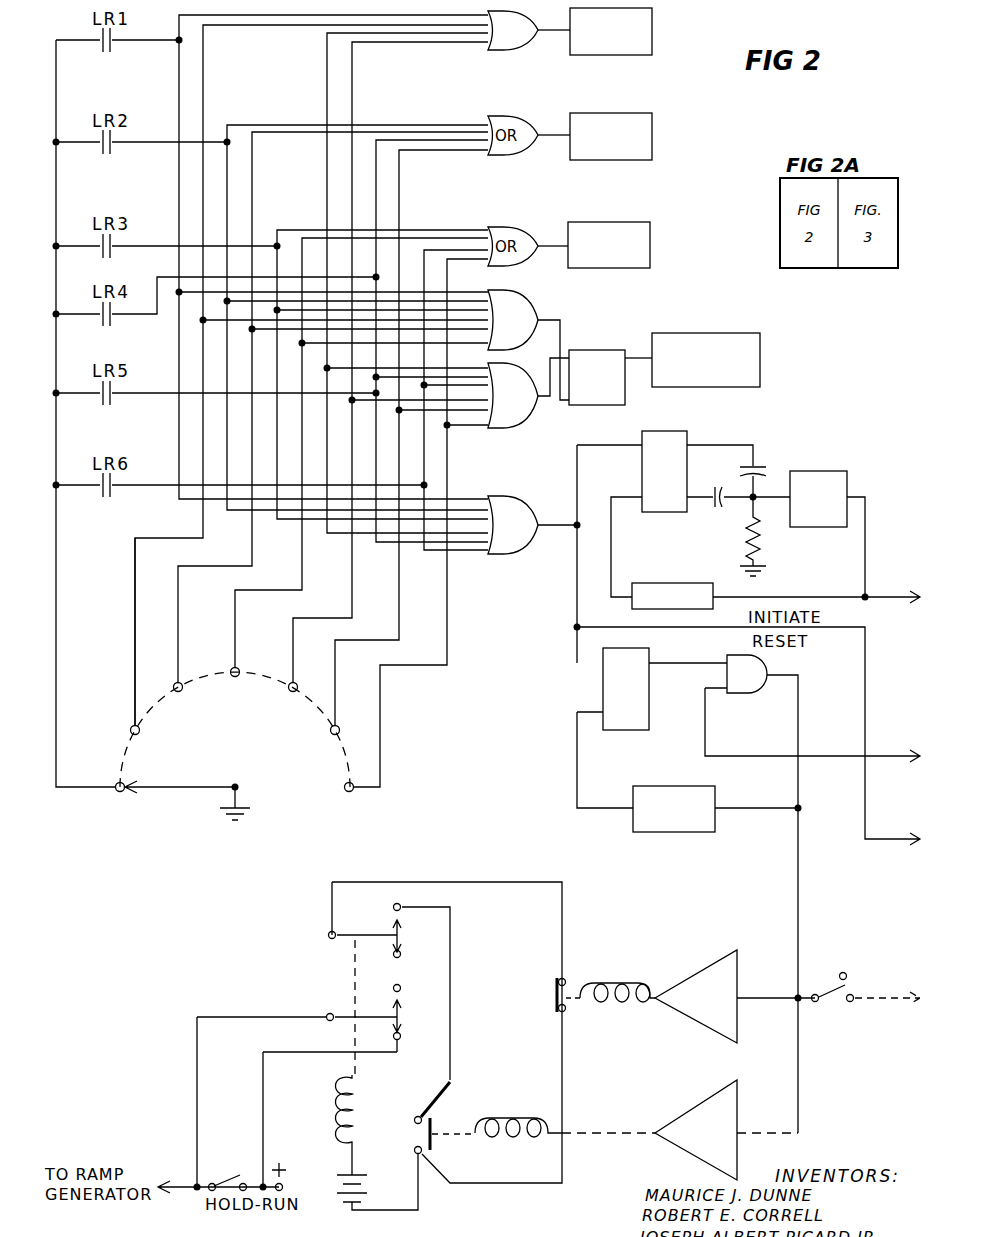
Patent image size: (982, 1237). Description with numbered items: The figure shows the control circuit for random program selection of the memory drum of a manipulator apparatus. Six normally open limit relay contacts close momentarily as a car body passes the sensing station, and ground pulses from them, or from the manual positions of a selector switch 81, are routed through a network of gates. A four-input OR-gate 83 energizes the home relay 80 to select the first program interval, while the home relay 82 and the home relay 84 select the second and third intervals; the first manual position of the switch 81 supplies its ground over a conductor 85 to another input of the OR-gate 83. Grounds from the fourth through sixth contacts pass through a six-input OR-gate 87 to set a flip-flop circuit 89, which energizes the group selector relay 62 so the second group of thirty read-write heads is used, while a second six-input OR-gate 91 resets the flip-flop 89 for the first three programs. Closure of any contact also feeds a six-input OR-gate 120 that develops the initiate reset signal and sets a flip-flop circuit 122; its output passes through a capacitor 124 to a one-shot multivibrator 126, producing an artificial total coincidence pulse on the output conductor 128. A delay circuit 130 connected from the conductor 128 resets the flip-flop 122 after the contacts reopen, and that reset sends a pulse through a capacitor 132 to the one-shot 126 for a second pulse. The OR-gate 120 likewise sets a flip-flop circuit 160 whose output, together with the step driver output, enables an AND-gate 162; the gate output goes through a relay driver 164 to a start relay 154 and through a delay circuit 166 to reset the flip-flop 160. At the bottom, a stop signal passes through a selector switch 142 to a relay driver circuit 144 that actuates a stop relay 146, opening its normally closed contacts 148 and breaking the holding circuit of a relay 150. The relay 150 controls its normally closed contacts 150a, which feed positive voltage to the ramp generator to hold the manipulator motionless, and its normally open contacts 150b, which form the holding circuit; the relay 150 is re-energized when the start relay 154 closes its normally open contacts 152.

The home relay 80 is at (653, 28).
The home relay 82 is at (640, 113).
The home relay 84 is at (625, 222).
The four-input OR-gate 83 is at (510, 50).
The six-input OR-gate 91 is at (538, 283).
The six-input OR-gate 87 is at (505, 367).
The flip-flop circuit 89 is at (586, 406).
The group selector relay 62 is at (668, 333).
The six-input OR-gate 120 is at (505, 497).
The flip-flop circuit 122 is at (690, 432).
The capacitor 124 is at (758, 465).
The one-shot multivibrator 126 is at (820, 471).
The output conductor 128 is at (865, 508).
The delay circuit 130 is at (645, 583).
The capacitor 132 is at (713, 509).
The flip-flop circuit 160 is at (651, 655).
The AND-gate 162 is at (750, 694).
The delay circuit 166 is at (690, 833).
The conductor 85 is at (135, 628).
The selector switch 81 is at (246, 758).
The relay 150 is at (362, 1125).
The normally closed contacts 150a is at (399, 1040).
The normally open contacts 150b is at (396, 922).
The normally open contacts 152 is at (423, 1156).
The stop relay 146 is at (613, 985).
The normally closed contacts 148 is at (556, 1012).
The relay driver circuit 144 is at (707, 1024).
The start relay 154 is at (498, 1120).
The relay driver 164 is at (677, 1157).
The selector switch 142 is at (818, 1003).